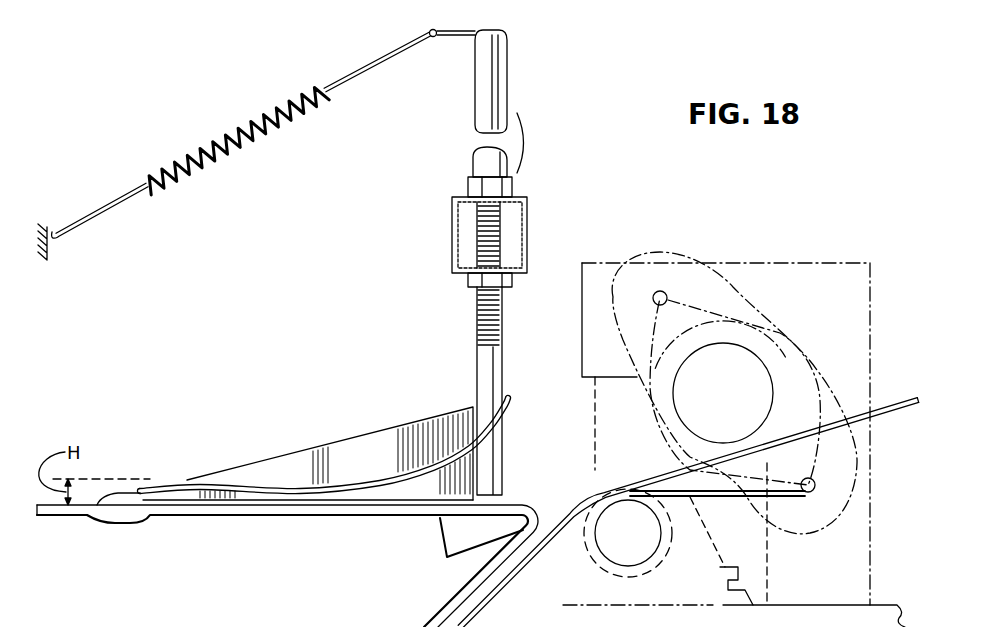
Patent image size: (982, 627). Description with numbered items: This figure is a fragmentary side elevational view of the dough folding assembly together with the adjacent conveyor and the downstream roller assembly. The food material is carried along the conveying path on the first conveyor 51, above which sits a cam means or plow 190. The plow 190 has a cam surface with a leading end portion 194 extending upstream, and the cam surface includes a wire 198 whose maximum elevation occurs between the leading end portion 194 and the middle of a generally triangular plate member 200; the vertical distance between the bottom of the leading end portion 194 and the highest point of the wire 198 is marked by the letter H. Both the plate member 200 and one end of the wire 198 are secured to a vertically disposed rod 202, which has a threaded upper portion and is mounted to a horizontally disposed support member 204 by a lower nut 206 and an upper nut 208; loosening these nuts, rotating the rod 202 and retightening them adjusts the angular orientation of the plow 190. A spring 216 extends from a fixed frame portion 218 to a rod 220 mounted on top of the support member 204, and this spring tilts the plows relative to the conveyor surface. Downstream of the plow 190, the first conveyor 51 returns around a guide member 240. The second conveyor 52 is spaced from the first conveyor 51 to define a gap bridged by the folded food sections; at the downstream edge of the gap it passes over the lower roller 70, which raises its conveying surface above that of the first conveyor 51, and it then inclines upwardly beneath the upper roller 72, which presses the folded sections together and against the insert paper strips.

The first conveyor 51 is at (420, 497).
The second conveyor 52 is at (852, 407).
The lower roller 70 is at (652, 540).
The upper roller 72 is at (740, 360).
The cam means or plow 190 is at (307, 440).
The leading end portion 194 is at (120, 493).
The wire 198 is at (243, 495).
The triangular plate member 200 is at (220, 477).
The rod 202 is at (497, 367).
The horizontal support member 204 is at (538, 217).
The lower nut 206 is at (513, 279).
The upper nut 208 is at (513, 187).
The spring 216 is at (172, 185).
The fixed frame portion 218 is at (50, 253).
The rod 220 is at (503, 72).
The guide member 240 is at (463, 537).